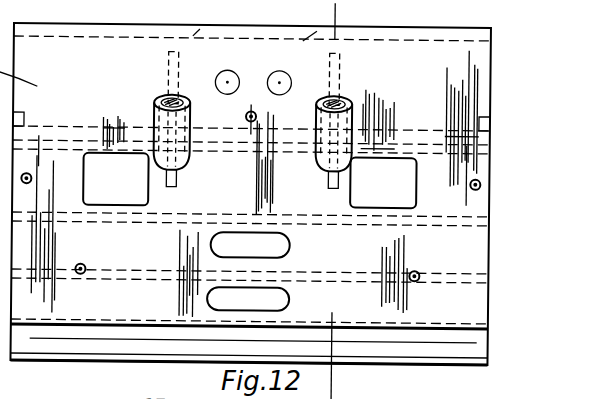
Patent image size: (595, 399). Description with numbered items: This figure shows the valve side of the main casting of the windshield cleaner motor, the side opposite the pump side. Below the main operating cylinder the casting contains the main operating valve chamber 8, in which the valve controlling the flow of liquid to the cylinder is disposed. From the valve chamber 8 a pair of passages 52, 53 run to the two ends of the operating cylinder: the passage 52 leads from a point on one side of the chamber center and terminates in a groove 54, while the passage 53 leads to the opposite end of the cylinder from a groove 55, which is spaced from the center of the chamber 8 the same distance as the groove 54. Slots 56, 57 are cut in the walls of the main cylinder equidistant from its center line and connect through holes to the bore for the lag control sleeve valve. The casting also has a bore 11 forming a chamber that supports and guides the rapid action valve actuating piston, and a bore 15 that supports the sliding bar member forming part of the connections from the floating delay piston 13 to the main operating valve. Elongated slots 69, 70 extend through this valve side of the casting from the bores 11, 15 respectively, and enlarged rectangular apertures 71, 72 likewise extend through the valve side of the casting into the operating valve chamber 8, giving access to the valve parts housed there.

The main operating valve chamber 8 is at (197, 211).
The bore 11 is at (128, 268).
The floating delay piston 13 is at (338, 8).
The bore 15 is at (121, 319).
The passage 52 is at (400, 127).
The passage 53 is at (60, 124).
The groove 54 is at (330, 176).
The groove 55 is at (182, 170).
The slot 56 is at (341, 58).
The slot 57 is at (169, 55).
The elongated slot 69 is at (278, 245).
The elongated slot 70 is at (275, 300).
The rectangular aperture 71 is at (97, 187).
The rectangular aperture 72 is at (418, 190).